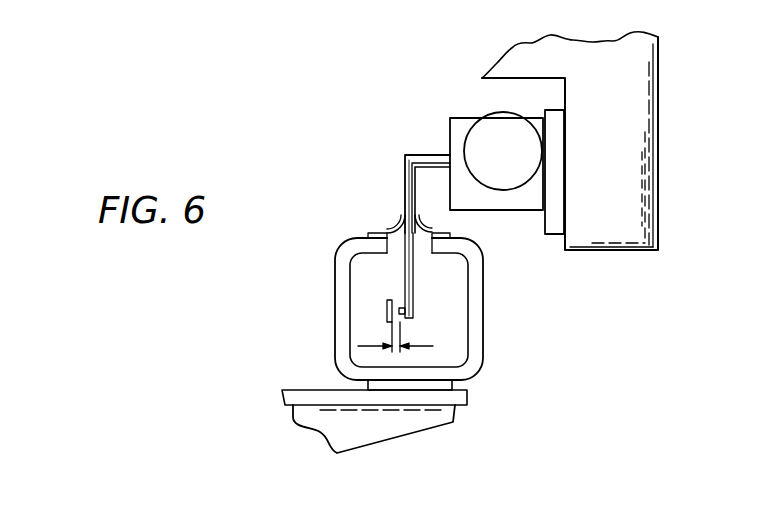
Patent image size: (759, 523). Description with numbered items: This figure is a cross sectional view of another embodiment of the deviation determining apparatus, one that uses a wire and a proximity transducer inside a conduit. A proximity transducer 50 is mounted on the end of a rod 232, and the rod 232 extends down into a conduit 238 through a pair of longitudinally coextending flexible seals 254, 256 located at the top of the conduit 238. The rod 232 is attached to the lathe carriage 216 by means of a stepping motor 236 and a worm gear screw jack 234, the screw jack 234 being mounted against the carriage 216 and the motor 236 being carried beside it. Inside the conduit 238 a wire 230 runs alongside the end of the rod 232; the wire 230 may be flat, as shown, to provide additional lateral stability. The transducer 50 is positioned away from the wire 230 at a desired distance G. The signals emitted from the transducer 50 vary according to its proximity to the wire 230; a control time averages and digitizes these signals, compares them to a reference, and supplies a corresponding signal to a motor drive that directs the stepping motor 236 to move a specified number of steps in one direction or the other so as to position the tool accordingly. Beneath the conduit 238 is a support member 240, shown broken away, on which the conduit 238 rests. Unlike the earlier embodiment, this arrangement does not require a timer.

The lathe carriage 216 is at (658, 112).
The rod 232 is at (413, 155).
The worm gear screw jack 234 is at (548, 235).
The stepping motor 236 is at (495, 117).
The conduit 238 is at (483, 326).
The base support 240 is at (453, 423).
The flexible seal 254 is at (436, 228).
The flexible seal 256 is at (402, 221).
The proximity transducer 50 is at (398, 304).
The wire 230 is at (384, 308).
The desired distance G is at (405, 340).